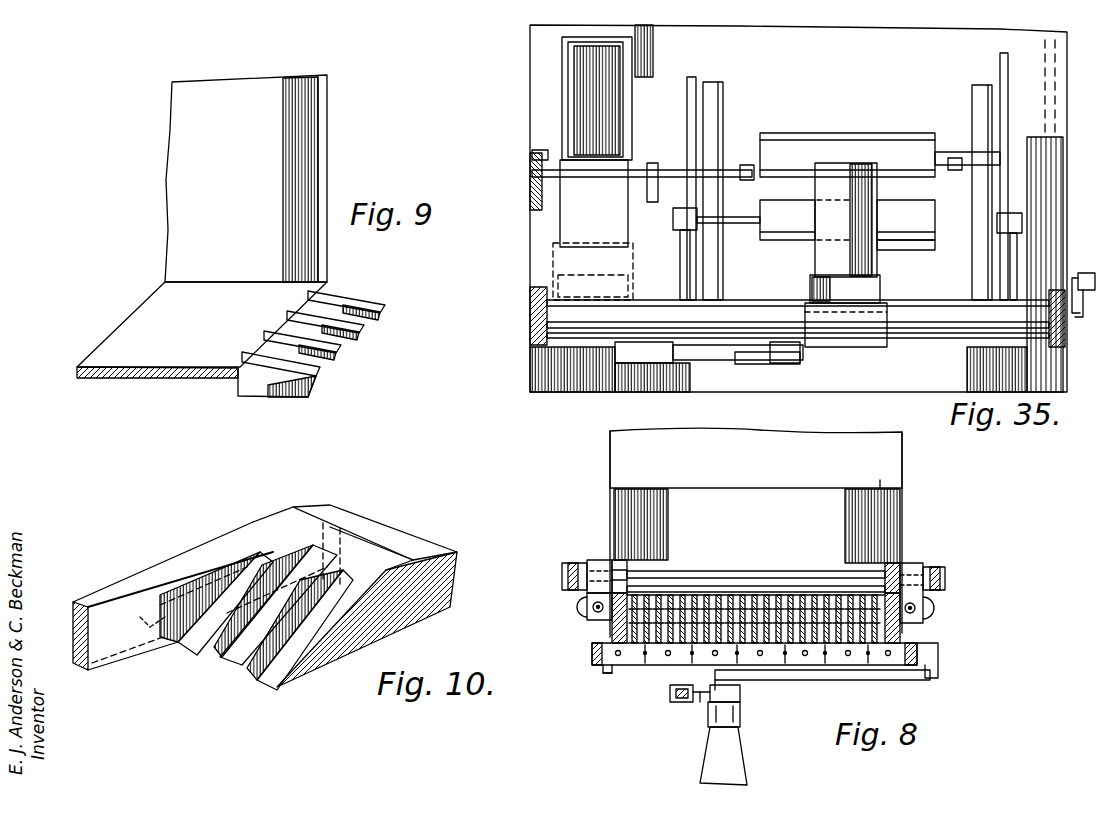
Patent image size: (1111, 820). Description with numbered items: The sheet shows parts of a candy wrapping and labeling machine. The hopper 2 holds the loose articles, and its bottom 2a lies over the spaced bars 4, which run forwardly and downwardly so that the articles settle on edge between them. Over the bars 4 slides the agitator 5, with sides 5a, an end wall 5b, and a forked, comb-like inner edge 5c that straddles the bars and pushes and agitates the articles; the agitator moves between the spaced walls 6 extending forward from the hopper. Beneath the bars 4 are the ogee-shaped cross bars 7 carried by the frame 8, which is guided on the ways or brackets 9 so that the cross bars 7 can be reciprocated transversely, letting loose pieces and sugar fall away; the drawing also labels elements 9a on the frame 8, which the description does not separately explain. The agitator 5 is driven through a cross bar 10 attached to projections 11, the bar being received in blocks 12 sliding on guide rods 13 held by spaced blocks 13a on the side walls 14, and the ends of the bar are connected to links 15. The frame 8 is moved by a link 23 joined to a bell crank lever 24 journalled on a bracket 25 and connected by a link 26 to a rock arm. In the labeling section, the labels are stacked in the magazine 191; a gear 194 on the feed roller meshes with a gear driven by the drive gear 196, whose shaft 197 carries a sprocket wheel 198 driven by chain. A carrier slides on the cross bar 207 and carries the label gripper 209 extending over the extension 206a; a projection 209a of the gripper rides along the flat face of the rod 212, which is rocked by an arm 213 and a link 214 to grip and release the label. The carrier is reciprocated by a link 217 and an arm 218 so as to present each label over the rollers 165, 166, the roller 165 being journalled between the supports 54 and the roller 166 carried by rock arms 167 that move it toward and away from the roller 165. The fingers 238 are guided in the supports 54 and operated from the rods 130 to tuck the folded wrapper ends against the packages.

In FIG. 8, the magazine or hopper 2 is at (812, 505).
In FIG. 10, the bottom of hopper 2a is at (447, 585).
In FIG. 10, the bars or rails 4 is at (121, 602).
In FIG. 8, the bars or rails 4 is at (690, 598).
In FIG. 9, the agitator 5 is at (231, 236).
In FIG. 8, the agitator 5 is at (756, 532).
In FIG. 9, the sides of agitator 5a is at (246, 178).
In FIG. 9, the end wall of agitator 5b is at (202, 339).
In FIG. 8, the end wall of agitator 5b is at (757, 526).
In FIG. 9, the comb-like inner edge of agitator 5c is at (333, 373).
In FIG. 8, the spaced walls 6 is at (610, 478).
In FIG. 8, the cross bars 7 is at (630, 667).
In FIG. 8, the frame 8 is at (938, 662).
In FIG. 8, the ways or brackets 9 is at (805, 658).
In FIG. 8, the pins 9a is at (608, 668).
In FIG. 8, the cross bar 10 is at (738, 571).
In FIG. 8, the projections 11 is at (627, 570).
In FIG. 8, the blocks 12 is at (594, 562).
In FIG. 8, the guide rods 13 is at (594, 612).
In FIG. 8, the spaced blocks 13a is at (975, 610).
In FIG. 8, the side walls 14 is at (610, 638).
In FIG. 8, the links 15 is at (562, 578).
In FIG. 8, the link 23 is at (857, 676).
In FIG. 8, the bell crank lever 24 is at (690, 702).
In FIG. 8, the bracket 25 is at (730, 750).
In FIG. 8, the link 26 is at (682, 705).
In FIG. 35, the supports 54 is at (716, 112).
In FIG. 35, the rods 130 is at (693, 77).
In FIG. 35, the roller 165 is at (808, 140).
In FIG. 35, the roller 166 is at (795, 240).
In FIG. 35, the rock arms 167 is at (682, 272).
In FIG. 35, the magazine 191 is at (582, 62).
In FIG. 35, the gear 194 is at (532, 132).
In FIG. 35, the drive gear 196 is at (534, 208).
In FIG. 35, the shaft 197 is at (698, 222).
In FIG. 35, the sprocket wheel 198 is at (653, 163).
In FIG. 35, the extension of carrier 206a is at (880, 272).
In FIG. 35, the cross bar 207 is at (942, 345).
In FIG. 35, the label gripper 209 is at (882, 289).
In FIG. 35, the projection of gripper 209a is at (812, 290).
In FIG. 35, the rod 212 is at (1075, 350).
In FIG. 35, the arm 213 is at (1078, 318).
In FIG. 35, the link 214 is at (530, 168).
In FIG. 35, the link 217 is at (812, 364).
In FIG. 35, the arm 218 is at (740, 360).
In FIG. 35, the fingers 238 is at (748, 165).